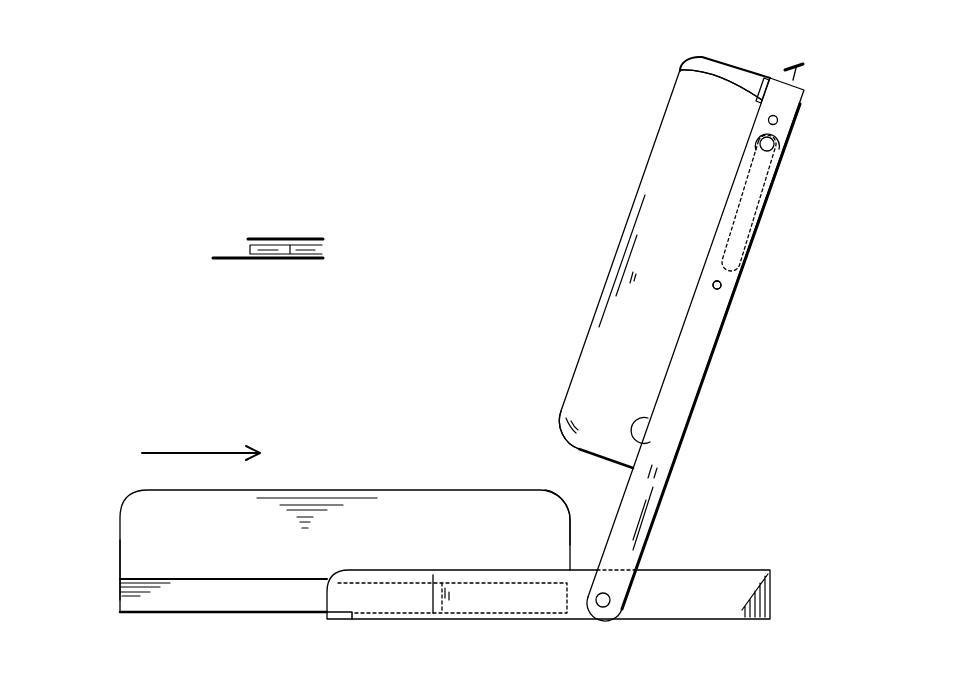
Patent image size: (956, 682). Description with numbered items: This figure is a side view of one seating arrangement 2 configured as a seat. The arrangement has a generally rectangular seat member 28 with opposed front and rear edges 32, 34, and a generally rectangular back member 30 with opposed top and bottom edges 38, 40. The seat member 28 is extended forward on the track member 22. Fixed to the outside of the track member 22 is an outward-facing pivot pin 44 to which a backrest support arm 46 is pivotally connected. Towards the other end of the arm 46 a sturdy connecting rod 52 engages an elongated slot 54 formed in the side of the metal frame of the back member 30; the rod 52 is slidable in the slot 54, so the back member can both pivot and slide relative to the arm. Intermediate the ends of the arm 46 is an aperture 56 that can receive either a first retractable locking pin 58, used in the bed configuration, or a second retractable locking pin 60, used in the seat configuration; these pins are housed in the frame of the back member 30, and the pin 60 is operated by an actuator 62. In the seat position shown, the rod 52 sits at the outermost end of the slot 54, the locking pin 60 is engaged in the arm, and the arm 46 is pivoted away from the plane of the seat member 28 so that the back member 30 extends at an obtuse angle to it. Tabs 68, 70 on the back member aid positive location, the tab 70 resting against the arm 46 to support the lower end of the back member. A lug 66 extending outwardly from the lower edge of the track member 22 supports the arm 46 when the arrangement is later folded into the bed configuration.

The seat assembly (folded position icon) 2 is at (282, 252).
The track member 22 is at (706, 607).
The seat member 28 is at (369, 490).
The back member 30 is at (648, 160).
The front edge 32 is at (120, 552).
The rear edge 34 is at (571, 528).
The top edge 38 is at (742, 63).
The bottom edge 40 is at (584, 448).
The pivot pin 44 is at (598, 622).
The backrest support arm 46 is at (692, 357).
The connecting rod 52 is at (772, 150).
The elongated slot 54 is at (735, 240).
The aperture 56 is at (721, 288).
The first retractable locking pin 58 is at (780, 122).
The second retractable locking pin 60 is at (779, 311).
The actuator 62 is at (805, 66).
The lug 66 is at (333, 620).
The tab 68 is at (680, 71).
The tab 70 is at (645, 415).